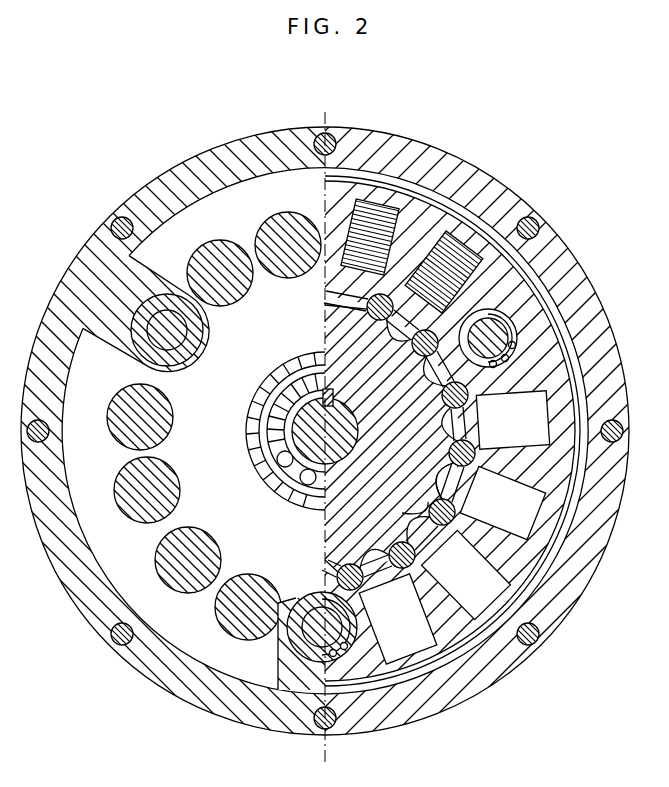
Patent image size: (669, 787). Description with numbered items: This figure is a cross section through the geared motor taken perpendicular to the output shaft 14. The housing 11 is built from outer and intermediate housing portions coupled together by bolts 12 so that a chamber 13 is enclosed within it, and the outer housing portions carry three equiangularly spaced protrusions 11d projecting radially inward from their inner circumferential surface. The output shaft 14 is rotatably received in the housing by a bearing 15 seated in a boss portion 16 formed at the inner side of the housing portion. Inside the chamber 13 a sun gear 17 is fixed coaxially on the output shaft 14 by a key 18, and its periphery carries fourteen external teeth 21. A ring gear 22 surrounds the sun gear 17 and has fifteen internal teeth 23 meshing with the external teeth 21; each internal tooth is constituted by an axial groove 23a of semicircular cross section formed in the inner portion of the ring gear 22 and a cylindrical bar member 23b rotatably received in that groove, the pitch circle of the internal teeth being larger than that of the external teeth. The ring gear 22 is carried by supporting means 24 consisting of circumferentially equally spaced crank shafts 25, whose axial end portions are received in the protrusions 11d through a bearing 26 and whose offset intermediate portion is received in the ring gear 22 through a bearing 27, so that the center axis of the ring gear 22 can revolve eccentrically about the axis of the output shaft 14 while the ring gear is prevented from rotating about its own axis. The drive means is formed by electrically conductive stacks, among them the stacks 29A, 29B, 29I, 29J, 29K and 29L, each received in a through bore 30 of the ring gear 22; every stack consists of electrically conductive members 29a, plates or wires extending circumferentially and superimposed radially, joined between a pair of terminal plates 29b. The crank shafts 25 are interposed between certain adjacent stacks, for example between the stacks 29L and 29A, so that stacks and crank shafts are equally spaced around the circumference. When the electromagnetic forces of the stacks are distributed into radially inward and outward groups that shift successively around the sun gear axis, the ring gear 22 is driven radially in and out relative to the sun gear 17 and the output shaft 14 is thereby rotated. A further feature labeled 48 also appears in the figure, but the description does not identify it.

The housing 11 is at (210, 141).
The protrusions 11d is at (118, 340).
The bolts 12 is at (318, 131).
The chamber 13 is at (228, 408).
The output shaft 14 is at (300, 437).
The bearing 15 is at (308, 483).
The boss portion 16 is at (260, 473).
The sun gear 17 is at (390, 419).
The key 18 is at (334, 388).
The external teeth 21 is at (420, 370).
The ring gear 22 is at (531, 563).
The internal teeth 23 is at (443, 410).
The axial grooves 23a is at (430, 497).
The cylindrical bar members 23b is at (428, 508).
The supporting means 24 is at (296, 685).
The crank shafts 25 is at (176, 345).
The bearing 26 is at (198, 329).
The bearing 27 is at (343, 655).
The electrically conductive stack 29A is at (478, 234).
The electrically conductive stack 29B is at (371, 194).
The electrically conductive stack 29I is at (419, 631).
The electrically conductive stack 29J is at (484, 581).
The electrically conductive stack 29K is at (522, 511).
The electrically conductive stack 29L is at (527, 426).
The electrically conductive members 29a is at (397, 200).
The terminal plates 29b is at (329, 214).
The through bores 30 is at (466, 286).
The hole 48 is at (214, 546).